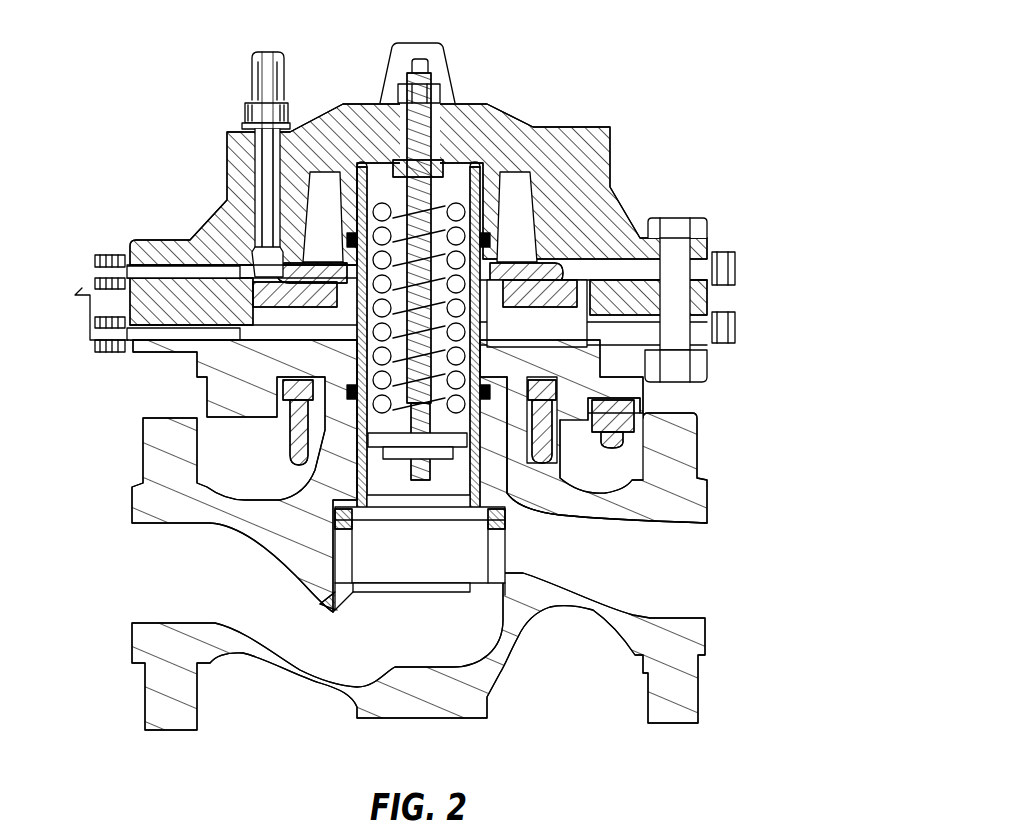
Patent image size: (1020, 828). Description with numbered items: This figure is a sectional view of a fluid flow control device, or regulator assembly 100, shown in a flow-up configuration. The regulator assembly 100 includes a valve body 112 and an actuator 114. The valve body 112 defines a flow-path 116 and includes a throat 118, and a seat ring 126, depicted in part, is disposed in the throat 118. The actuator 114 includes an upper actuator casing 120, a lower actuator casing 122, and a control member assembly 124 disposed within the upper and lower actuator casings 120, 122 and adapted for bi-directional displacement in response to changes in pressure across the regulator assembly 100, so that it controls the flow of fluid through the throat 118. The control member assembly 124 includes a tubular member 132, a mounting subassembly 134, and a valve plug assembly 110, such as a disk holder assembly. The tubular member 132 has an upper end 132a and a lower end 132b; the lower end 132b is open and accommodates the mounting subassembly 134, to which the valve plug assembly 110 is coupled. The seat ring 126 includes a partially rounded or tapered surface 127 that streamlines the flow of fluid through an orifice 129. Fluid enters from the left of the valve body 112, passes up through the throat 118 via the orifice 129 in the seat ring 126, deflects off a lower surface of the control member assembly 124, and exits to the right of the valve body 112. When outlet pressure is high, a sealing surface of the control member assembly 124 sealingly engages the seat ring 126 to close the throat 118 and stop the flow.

The regulator assembly 100 is at (609, 54).
The valve plug assembly 110 is at (512, 548).
The valve body 112 is at (680, 697).
The actuator 114 is at (598, 172).
The flow-path 116 is at (178, 578).
The throat 118 is at (411, 593).
The upper actuator casing 120 is at (697, 250).
The lower actuator casing 122 is at (697, 312).
The control member assembly 124 is at (504, 326).
The seat ring 126 is at (327, 594).
The rounded or tapered surface 127 is at (362, 594).
The orifice 129 is at (470, 594).
The tubular member 132 is at (357, 320).
The upper end 132a is at (357, 165).
The lower end 132b is at (357, 495).
The mounting subassembly 134 is at (483, 452).